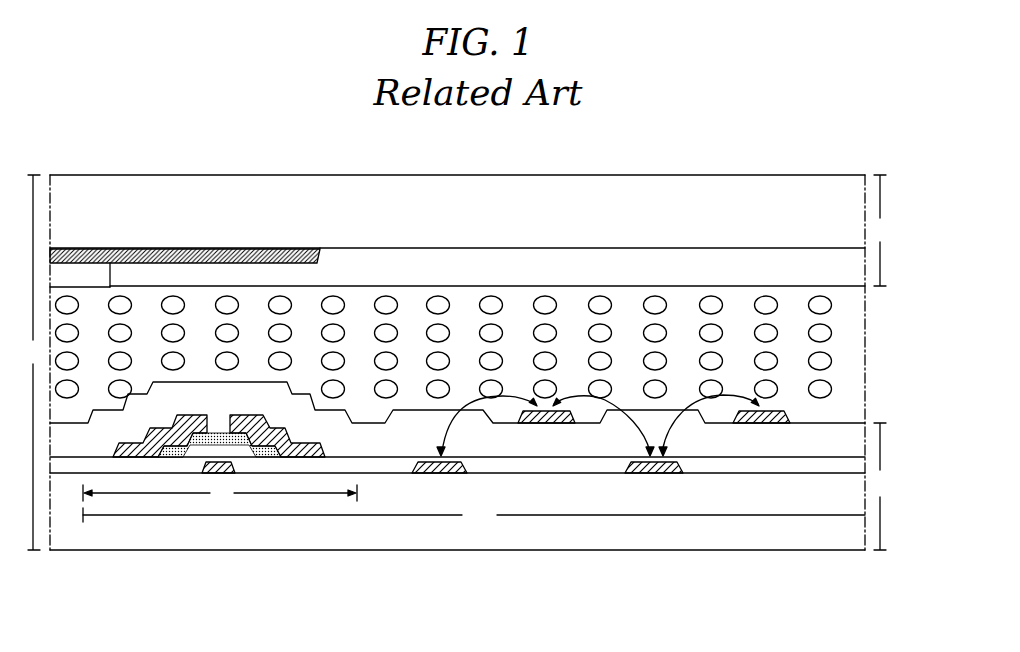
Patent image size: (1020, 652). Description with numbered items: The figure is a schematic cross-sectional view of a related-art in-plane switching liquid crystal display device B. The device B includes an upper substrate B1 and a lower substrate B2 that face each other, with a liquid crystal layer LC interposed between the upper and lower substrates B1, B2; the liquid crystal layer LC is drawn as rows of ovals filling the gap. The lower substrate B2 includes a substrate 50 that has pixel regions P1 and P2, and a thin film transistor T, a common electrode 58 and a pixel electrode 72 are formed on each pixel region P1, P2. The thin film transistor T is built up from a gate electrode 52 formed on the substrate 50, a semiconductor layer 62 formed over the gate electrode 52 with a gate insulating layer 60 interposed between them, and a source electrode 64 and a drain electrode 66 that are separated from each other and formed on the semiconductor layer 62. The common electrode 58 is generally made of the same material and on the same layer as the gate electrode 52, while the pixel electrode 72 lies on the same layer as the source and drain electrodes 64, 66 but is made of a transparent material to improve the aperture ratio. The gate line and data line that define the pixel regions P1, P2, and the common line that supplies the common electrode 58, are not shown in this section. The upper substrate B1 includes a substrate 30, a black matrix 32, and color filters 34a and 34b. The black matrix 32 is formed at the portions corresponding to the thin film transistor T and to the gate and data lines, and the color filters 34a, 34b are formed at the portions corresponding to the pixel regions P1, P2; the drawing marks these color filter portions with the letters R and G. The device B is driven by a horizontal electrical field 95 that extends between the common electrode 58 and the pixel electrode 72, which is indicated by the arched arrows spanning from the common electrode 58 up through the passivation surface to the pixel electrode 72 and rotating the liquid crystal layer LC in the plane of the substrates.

The substrate 30 is at (509, 222).
The black matrix 32 is at (247, 253).
The color filter 34a is at (95, 273).
The color filter 34b is at (740, 257).
The red sub-pixel region R is at (80, 276).
The green sub-pixel region G is at (487, 271).
The liquid crystal layer LC is at (853, 318).
The horizontal electrical field 95 is at (627, 398).
The substrate 50 is at (847, 541).
The gate electrode 52 is at (213, 473).
The common electrode 58 is at (450, 473).
The gate insulating layer 60 is at (417, 473).
The semiconductor layer 62 is at (272, 457).
The source electrode 64 is at (195, 417).
The drain electrode 66 is at (248, 416).
The pixel electrode 72 is at (547, 420).
The thin film transistor T is at (220, 493).
The pixel region P1 is at (69, 516).
The pixel region P2 is at (474, 518).
The IPS-LCD device B is at (33, 362).
The upper substrate B1 is at (883, 230).
The lower substrate B2 is at (882, 486).